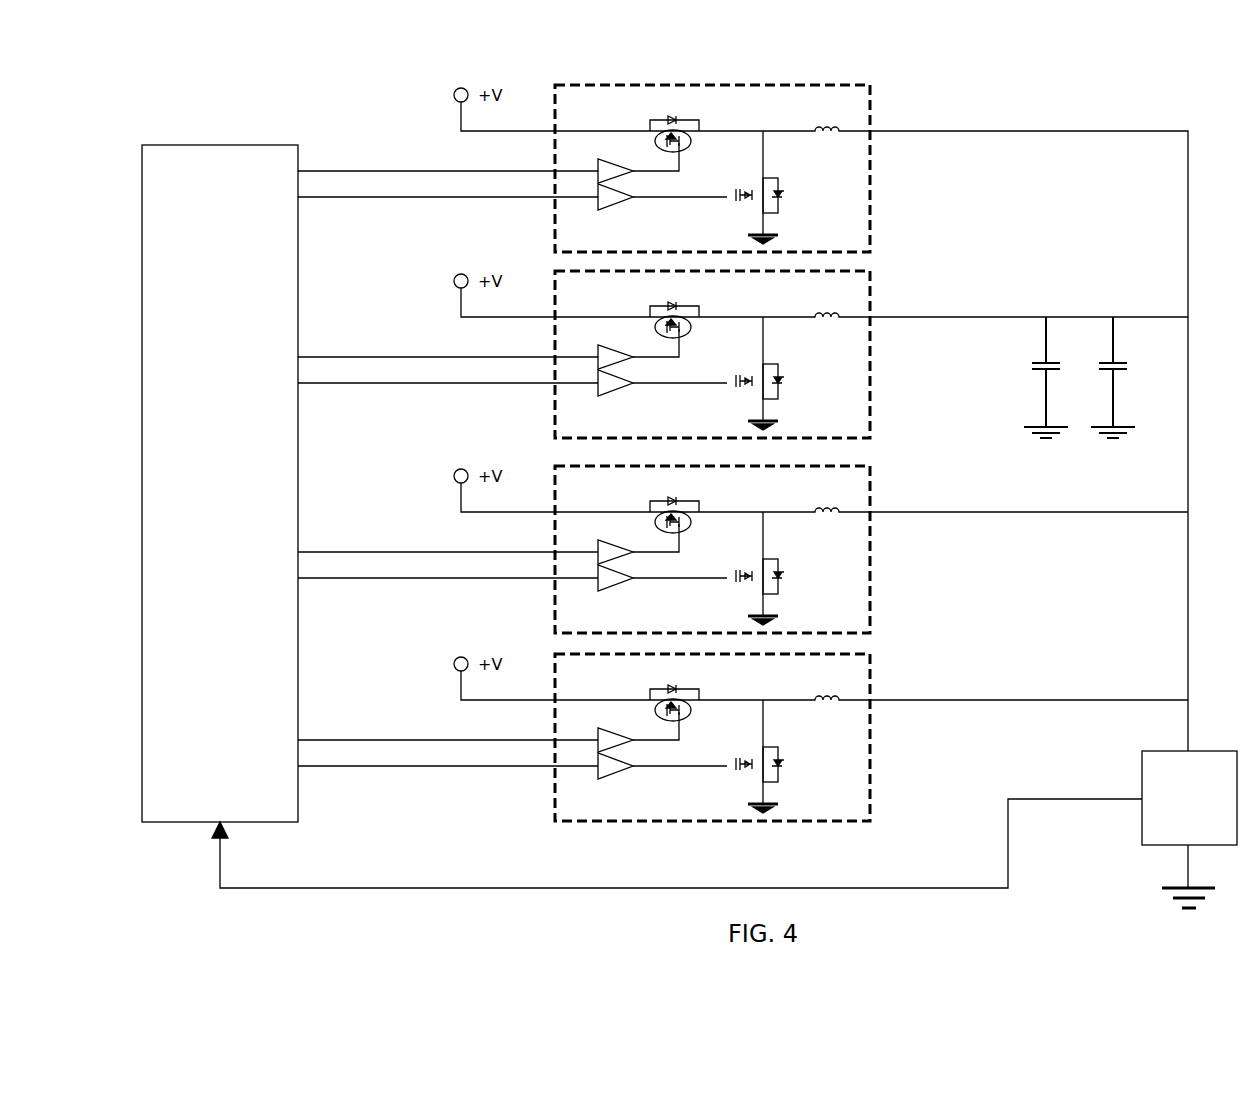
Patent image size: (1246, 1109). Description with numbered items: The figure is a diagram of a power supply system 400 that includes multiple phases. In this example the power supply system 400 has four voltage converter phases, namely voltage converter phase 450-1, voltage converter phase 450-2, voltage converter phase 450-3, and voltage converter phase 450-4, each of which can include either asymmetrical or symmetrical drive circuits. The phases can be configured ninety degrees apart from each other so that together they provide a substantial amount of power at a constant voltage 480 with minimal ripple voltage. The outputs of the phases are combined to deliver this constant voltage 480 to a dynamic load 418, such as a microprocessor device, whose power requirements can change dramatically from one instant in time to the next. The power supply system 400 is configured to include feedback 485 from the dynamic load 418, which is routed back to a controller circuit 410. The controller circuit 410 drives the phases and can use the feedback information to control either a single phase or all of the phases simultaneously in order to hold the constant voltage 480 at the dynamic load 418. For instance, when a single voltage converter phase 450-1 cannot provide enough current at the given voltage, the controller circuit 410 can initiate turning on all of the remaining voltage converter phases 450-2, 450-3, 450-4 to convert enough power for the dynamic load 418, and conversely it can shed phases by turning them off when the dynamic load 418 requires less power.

The power supply system 400 is at (689, 495).
The controller circuit 410 is at (220, 483).
The dynamic load 418 is at (1189, 829).
The voltage converter phase 450-1 is at (872, 189).
The voltage converter phase 450-2 is at (872, 379).
The voltage converter phase 450-3 is at (872, 574).
The voltage converter phase 450-4 is at (872, 733).
The constant voltage 480 is at (1098, 128).
The feedback 485 is at (483, 892).